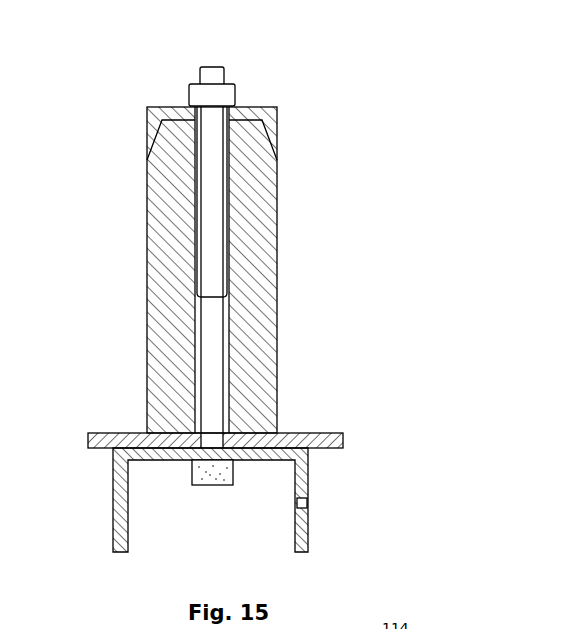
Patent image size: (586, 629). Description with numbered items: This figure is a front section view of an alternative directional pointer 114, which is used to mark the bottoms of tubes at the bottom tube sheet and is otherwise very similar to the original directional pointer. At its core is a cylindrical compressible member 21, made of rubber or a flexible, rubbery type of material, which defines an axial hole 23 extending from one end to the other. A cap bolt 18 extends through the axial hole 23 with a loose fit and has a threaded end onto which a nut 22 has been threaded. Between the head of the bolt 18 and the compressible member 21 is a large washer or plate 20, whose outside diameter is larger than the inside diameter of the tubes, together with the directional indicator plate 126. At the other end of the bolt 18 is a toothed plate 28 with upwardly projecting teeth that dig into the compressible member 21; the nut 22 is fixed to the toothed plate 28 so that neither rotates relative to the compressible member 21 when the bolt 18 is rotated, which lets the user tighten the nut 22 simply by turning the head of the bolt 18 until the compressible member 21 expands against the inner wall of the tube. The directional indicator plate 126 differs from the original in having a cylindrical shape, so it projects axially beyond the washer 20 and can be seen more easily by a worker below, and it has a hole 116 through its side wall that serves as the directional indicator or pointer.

The cap bolt 18 is at (218, 486).
The washer or plate 20 is at (88, 433).
The compressible member 21 is at (147, 323).
The nut 22 is at (188, 98).
The axial hole 23 is at (224, 248).
The toothed plate 28 is at (250, 107).
The directional pointer 114 is at (352, 128).
The hole 116 is at (306, 503).
The directional indicator plate 126 is at (113, 496).